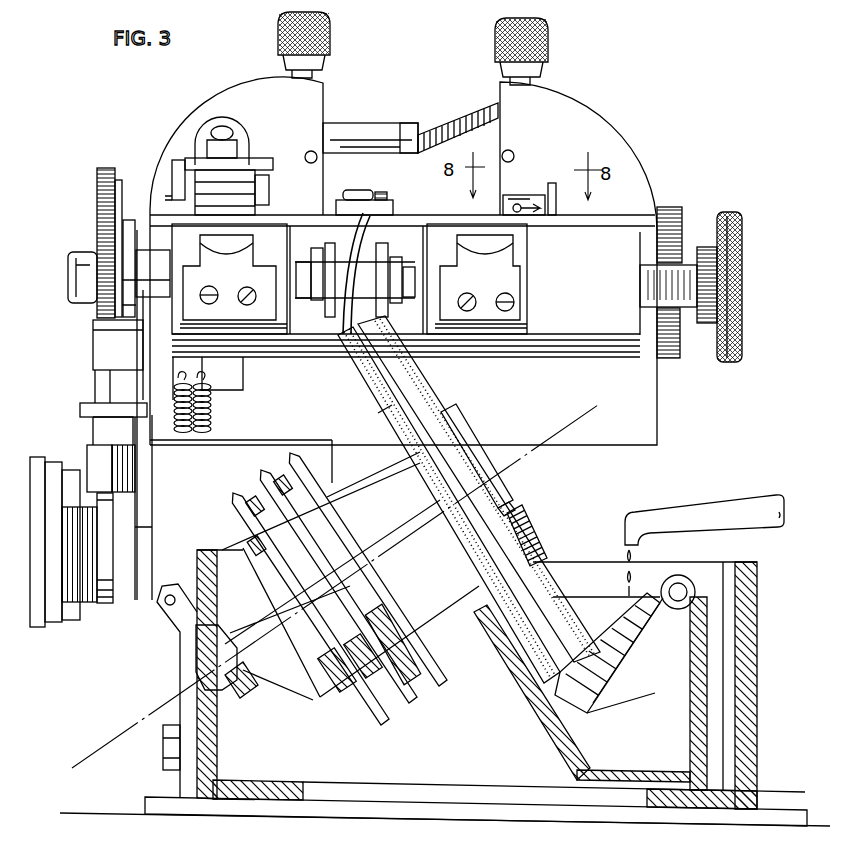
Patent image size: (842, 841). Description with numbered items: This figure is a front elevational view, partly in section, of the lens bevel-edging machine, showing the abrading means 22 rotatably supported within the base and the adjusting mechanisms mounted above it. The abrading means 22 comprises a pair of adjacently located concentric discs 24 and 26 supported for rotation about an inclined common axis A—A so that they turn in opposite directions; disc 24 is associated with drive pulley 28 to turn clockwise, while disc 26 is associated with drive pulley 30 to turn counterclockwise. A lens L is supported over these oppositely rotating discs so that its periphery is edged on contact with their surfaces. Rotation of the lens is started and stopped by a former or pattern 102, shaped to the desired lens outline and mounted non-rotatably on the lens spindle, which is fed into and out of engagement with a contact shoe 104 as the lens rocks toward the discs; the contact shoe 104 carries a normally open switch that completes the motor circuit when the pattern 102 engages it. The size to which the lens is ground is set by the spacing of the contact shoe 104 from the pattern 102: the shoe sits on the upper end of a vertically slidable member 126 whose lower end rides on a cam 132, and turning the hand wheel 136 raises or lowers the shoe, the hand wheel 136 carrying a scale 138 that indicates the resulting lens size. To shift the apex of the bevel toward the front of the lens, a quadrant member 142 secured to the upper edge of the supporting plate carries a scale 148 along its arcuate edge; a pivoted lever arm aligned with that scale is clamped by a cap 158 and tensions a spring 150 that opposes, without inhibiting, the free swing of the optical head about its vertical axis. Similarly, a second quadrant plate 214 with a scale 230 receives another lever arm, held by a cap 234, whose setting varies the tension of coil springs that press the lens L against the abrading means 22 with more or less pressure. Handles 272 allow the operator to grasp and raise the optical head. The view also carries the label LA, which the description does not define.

The cap 234 is at (331, 26).
The cap 158 is at (548, 30).
The scale 230 is at (224, 100).
The quadrant plate 214 is at (326, 100).
The spring 150 is at (468, 118).
The scale 148 is at (588, 103).
The quadrant member 142 is at (641, 146).
The former or pattern 102 is at (125, 233).
The lateral adjustment knob LA is at (68, 277).
The lens L is at (383, 216).
The handles 272 is at (243, 255).
The contact shoe 104 is at (95, 361).
The hand wheel 136 is at (45, 458).
The member 126 is at (137, 471).
The cam 132 is at (108, 615).
The disc 26 is at (368, 372).
The disc 24 is at (402, 383).
The abrading means 22 is at (544, 523).
The scale 138 is at (655, 442).
The drive pulley 30 is at (447, 684).
The drive pulley 28 is at (388, 724).
The axis A— A is at (334, 590).